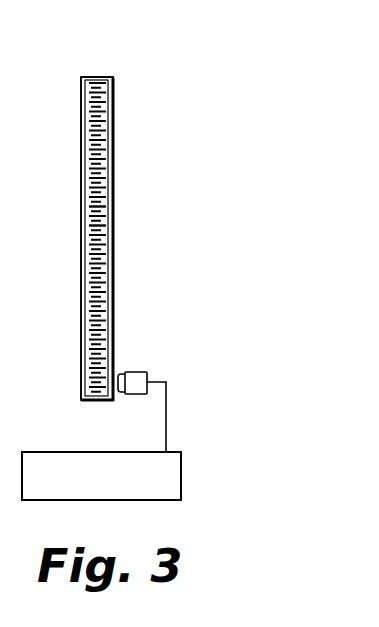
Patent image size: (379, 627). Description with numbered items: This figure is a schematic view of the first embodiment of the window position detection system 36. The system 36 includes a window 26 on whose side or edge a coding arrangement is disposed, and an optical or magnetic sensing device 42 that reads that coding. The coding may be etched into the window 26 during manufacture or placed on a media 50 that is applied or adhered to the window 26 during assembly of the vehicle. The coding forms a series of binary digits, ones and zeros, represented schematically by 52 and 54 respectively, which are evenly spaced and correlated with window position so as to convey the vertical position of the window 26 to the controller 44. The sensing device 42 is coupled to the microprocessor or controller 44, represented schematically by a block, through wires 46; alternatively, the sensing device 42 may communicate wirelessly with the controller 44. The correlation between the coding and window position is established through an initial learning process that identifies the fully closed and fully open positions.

The window 26 is at (81, 107).
The window position detection system 36 is at (122, 99).
The sensing device 42 is at (131, 372).
The controller 44 is at (62, 452).
The wires 46 is at (166, 416).
The media 50 is at (90, 280).
The ones 52 is at (105, 212).
The zeros 54 is at (99, 223).